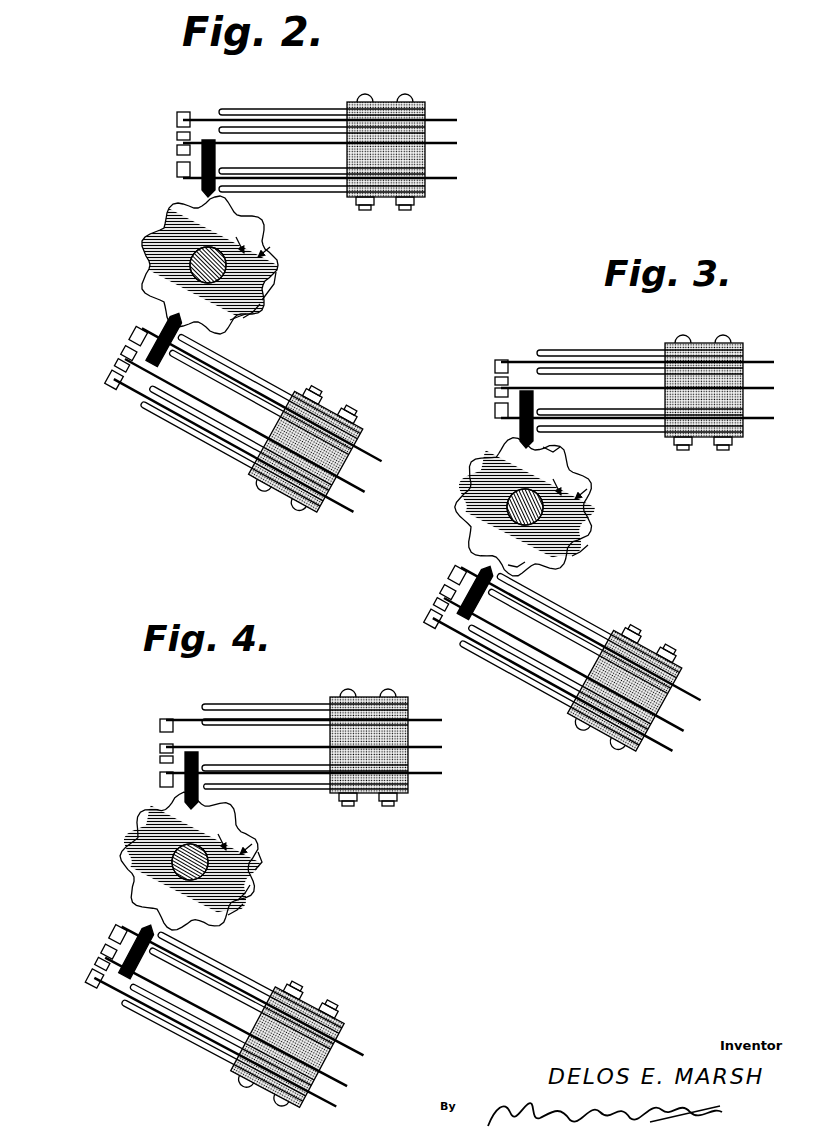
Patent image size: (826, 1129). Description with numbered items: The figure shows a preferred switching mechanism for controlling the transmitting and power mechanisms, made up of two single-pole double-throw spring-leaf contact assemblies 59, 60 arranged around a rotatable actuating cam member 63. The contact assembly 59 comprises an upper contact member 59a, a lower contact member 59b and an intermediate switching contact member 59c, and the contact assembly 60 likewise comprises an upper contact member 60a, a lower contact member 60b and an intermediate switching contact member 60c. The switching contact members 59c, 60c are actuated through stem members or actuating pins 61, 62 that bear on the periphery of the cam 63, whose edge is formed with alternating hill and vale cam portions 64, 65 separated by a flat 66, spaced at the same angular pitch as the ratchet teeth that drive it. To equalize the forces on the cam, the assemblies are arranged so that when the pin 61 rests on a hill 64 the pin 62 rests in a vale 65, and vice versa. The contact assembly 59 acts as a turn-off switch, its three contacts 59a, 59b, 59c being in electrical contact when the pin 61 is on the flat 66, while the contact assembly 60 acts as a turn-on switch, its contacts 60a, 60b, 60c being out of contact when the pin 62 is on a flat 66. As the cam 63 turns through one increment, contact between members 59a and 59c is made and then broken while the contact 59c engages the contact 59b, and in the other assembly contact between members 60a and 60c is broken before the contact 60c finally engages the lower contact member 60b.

In FIG. 2, the contact assembly 59 is at (170, 163).
In FIG. 3, the contact assembly 59 is at (489, 400).
In FIG. 4, the contact assembly 59 is at (305, 747).
In FIG. 2, the upper contact member 59a is at (177, 121).
In FIG. 3, the upper contact member 59a is at (495, 367).
In FIG. 4, the upper contact member 59a is at (160, 722).
In FIG. 2, the lower contact member 59b is at (177, 173).
In FIG. 3, the lower contact member 59b is at (495, 413).
In FIG. 4, the lower contact member 59b is at (160, 779).
In FIG. 2, the intermediate switching contact member 59c is at (177, 150).
In FIG. 3, the intermediate switching contact member 59c is at (496, 383).
In FIG. 4, the intermediate switching contact member 59c is at (160, 763).
In FIG. 2, the contact assembly 60 is at (140, 397).
In FIG. 3, the contact assembly 60 is at (452, 637).
In FIG. 4, the contact assembly 60 is at (114, 930).
In FIG. 2, the upper contact member 60a is at (142, 326).
In FIG. 3, the upper contact member 60a is at (458, 573).
In FIG. 4, the upper contact member 60a is at (122, 925).
In FIG. 2, the lower contact member 60b is at (118, 369).
In FIG. 3, the lower contact member 60b is at (438, 613).
In FIG. 4, the lower contact member 60b is at (97, 975).
In FIG. 2, the intermediate switching contact member 60c is at (132, 344).
In FIG. 3, the intermediate switching contact member 60c is at (448, 597).
In FIG. 4, the intermediate switching contact member 60c is at (107, 962).
In FIG. 2, the actuating pin 61 is at (204, 190).
In FIG. 3, the actuating pin 61 is at (518, 432).
In FIG. 4, the actuating pin 61 is at (191, 780).
In FIG. 2, the actuating pin 62 is at (168, 319).
In FIG. 3, the actuating pin 62 is at (485, 567).
In FIG. 4, the actuating pin 62 is at (146, 924).
In FIG. 2, the actuating cam member 63 is at (258, 257).
In FIG. 3, the actuating cam member 63 is at (578, 480).
In FIG. 4, the actuating cam member 63 is at (242, 845).
In FIG. 2, the hill cam portion 64 is at (272, 297).
In FIG. 3, the hill cam portion 64 is at (580, 553).
In FIG. 4, the hill cam portion 64 is at (263, 862).
In FIG. 2, the vale cam portion 65 is at (238, 316).
In FIG. 4, the vale cam portion 65 is at (245, 893).
In FIG. 2, the flat 66 is at (252, 315).
In FIG. 3, the flat 66 is at (553, 452).
In FIG. 4, the flat 66 is at (237, 910).